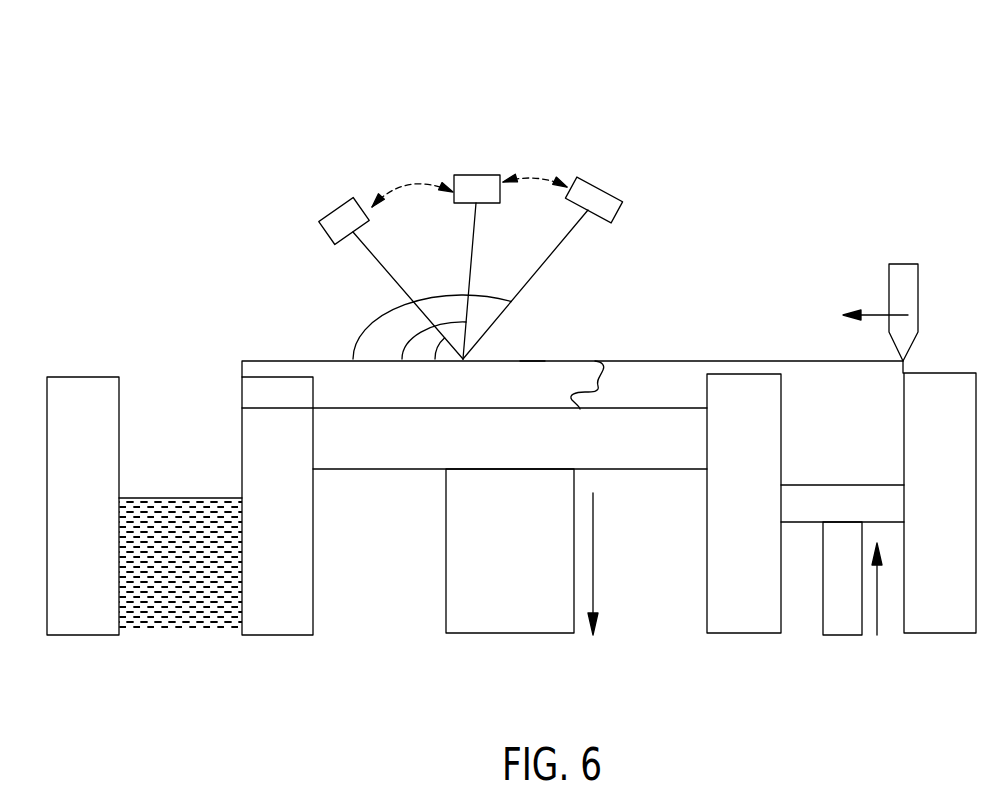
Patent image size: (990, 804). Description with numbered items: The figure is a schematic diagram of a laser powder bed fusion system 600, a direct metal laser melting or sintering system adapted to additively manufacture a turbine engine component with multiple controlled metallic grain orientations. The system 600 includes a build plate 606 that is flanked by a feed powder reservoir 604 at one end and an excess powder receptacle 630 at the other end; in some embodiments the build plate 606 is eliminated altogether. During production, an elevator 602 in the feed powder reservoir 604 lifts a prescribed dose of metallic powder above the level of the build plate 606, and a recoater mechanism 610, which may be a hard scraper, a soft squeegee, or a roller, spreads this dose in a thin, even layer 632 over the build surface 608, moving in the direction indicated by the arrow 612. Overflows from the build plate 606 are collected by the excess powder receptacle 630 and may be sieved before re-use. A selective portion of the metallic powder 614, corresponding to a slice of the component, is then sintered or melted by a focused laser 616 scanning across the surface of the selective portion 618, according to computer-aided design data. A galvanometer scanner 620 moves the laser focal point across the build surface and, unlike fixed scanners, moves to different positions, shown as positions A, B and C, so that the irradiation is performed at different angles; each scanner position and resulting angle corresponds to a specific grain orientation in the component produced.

The laser powder bed fusion system 600 is at (254, 104).
The elevator 602 is at (812, 512).
The feed powder reservoir 604 is at (842, 674).
The build plate 606 is at (652, 462).
The build surface 608 is at (617, 392).
The recoater mechanism 610 is at (908, 297).
The arrow 612 is at (872, 315).
The metallic powder 614 is at (570, 370).
The focused laser 616 is at (585, 265).
The selective portion 618 is at (535, 345).
The galvanometer scanner 620 is at (338, 218).
The excess powder receptacle 630 is at (185, 671).
The layer 632 is at (673, 372).